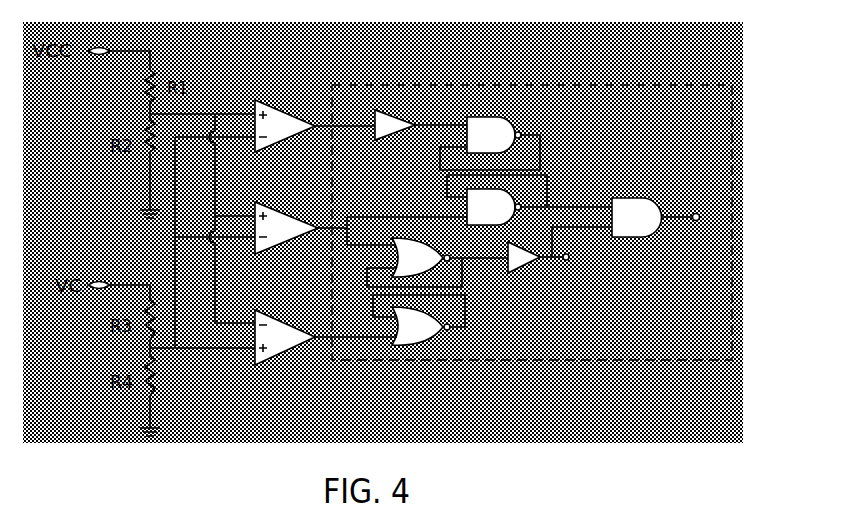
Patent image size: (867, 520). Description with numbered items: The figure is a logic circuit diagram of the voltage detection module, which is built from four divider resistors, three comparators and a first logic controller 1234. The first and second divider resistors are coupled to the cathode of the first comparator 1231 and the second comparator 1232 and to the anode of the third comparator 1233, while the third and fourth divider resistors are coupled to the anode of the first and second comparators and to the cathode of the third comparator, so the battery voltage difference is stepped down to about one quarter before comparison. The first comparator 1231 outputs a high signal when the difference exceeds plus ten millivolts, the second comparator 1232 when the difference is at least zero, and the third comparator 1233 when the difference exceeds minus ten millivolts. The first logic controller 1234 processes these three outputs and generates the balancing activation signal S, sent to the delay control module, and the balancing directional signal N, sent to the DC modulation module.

The first comparator 1231 is at (272, 101).
The second comparator 1232 is at (272, 203).
The third comparator 1233 is at (289, 300).
The first logic controller 1234 is at (560, 85).